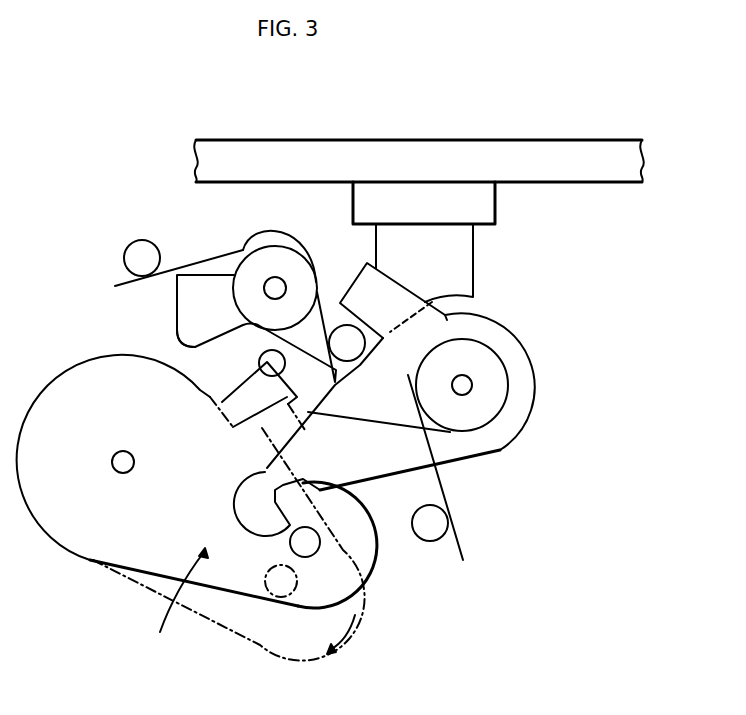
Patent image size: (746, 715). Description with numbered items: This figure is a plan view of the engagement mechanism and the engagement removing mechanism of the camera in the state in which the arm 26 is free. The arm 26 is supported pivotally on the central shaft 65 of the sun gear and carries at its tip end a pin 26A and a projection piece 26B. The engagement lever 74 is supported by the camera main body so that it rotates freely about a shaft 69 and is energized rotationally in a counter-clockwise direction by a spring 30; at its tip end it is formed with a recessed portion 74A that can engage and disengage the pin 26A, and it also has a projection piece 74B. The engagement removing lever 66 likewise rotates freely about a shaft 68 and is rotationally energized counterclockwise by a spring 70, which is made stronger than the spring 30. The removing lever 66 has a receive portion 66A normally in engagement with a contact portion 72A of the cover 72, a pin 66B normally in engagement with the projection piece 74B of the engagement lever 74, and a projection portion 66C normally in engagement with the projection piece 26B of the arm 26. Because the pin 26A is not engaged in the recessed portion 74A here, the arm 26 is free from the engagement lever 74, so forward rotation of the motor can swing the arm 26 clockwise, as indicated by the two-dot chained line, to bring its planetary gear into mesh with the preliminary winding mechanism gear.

The cover 72 is at (538, 156).
The contact portion 72A is at (478, 207).
The receive portion 66A is at (455, 253).
The engagement removing lever 66 is at (242, 236).
The pin 66B is at (355, 345).
The projection portion 66C is at (190, 333).
The shaft 68 is at (275, 277).
The spring 70 is at (192, 262).
The engagement lever 74 is at (528, 403).
The recessed portion 74A is at (265, 472).
The projection piece 74B is at (365, 265).
The shaft 69 is at (470, 381).
The spring 30 is at (440, 480).
The arm 26 is at (223, 632).
The pin 26A is at (312, 553).
The projection piece 26B is at (265, 387).
The central shaft 65 is at (117, 473).